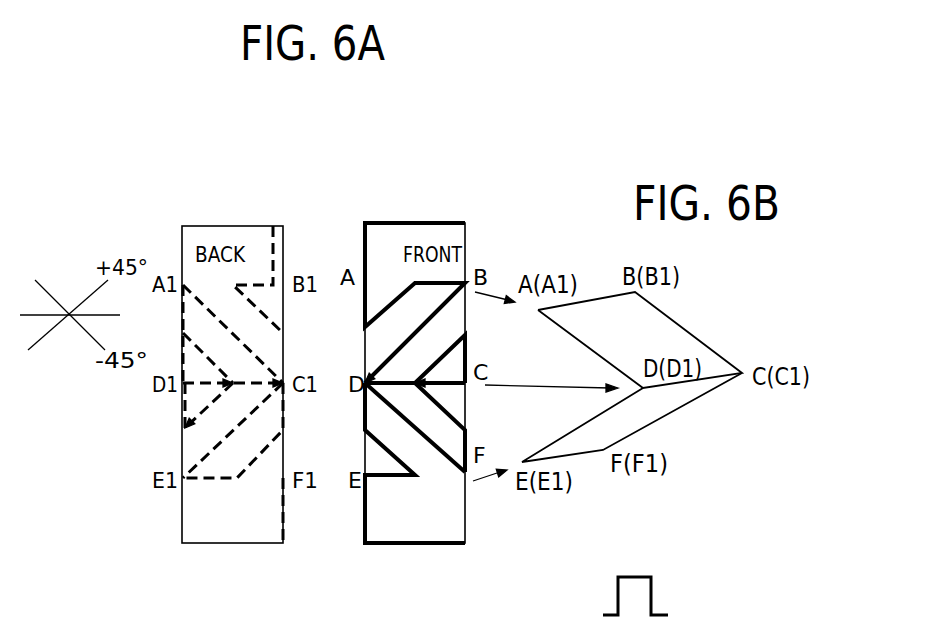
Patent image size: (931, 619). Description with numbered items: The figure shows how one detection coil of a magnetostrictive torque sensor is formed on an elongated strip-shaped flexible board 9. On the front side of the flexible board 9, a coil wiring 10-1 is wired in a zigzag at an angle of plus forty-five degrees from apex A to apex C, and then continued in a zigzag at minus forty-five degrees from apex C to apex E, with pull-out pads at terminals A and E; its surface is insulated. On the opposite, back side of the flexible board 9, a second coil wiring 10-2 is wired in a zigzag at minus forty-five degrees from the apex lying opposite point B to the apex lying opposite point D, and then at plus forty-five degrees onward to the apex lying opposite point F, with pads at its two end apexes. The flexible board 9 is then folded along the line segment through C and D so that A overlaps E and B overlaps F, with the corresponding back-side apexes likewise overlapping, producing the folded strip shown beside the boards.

The flexible board 9 is at (193, 233).
The coil wiring 10-1 is at (370, 285).
The coil wiring 10-2 is at (252, 284).